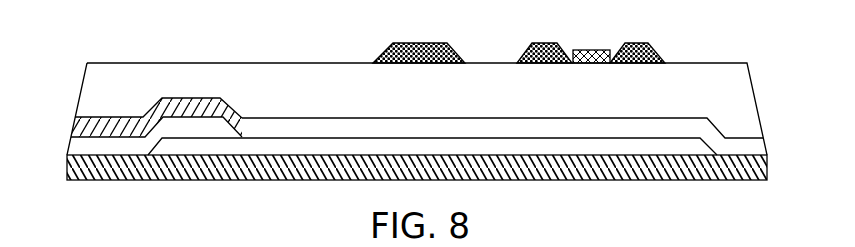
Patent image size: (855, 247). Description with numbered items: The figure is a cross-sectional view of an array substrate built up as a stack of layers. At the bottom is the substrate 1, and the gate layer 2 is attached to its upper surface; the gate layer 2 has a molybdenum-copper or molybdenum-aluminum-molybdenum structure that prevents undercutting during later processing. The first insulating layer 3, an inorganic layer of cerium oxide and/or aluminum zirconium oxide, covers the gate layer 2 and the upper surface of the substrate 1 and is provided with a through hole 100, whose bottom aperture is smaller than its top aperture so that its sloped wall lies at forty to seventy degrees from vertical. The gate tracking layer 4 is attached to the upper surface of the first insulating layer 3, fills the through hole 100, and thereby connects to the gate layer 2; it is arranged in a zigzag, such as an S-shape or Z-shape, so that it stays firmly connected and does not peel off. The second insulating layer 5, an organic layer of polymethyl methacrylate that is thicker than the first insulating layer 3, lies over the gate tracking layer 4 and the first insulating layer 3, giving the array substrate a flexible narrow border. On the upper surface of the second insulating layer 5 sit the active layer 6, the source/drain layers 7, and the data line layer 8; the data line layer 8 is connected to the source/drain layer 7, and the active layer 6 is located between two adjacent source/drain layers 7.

The through hole 100 is at (267, 110).
The substrate 1 is at (767, 163).
The gate layer 2 is at (660, 155).
The first insulating layer 3 is at (618, 137).
The gate tracking layer 4 is at (87, 130).
The second insulating layer 5 is at (638, 92).
The active layer 6 is at (592, 50).
The source/drain layer 7 is at (540, 43).
The data line layer 8 is at (425, 50).